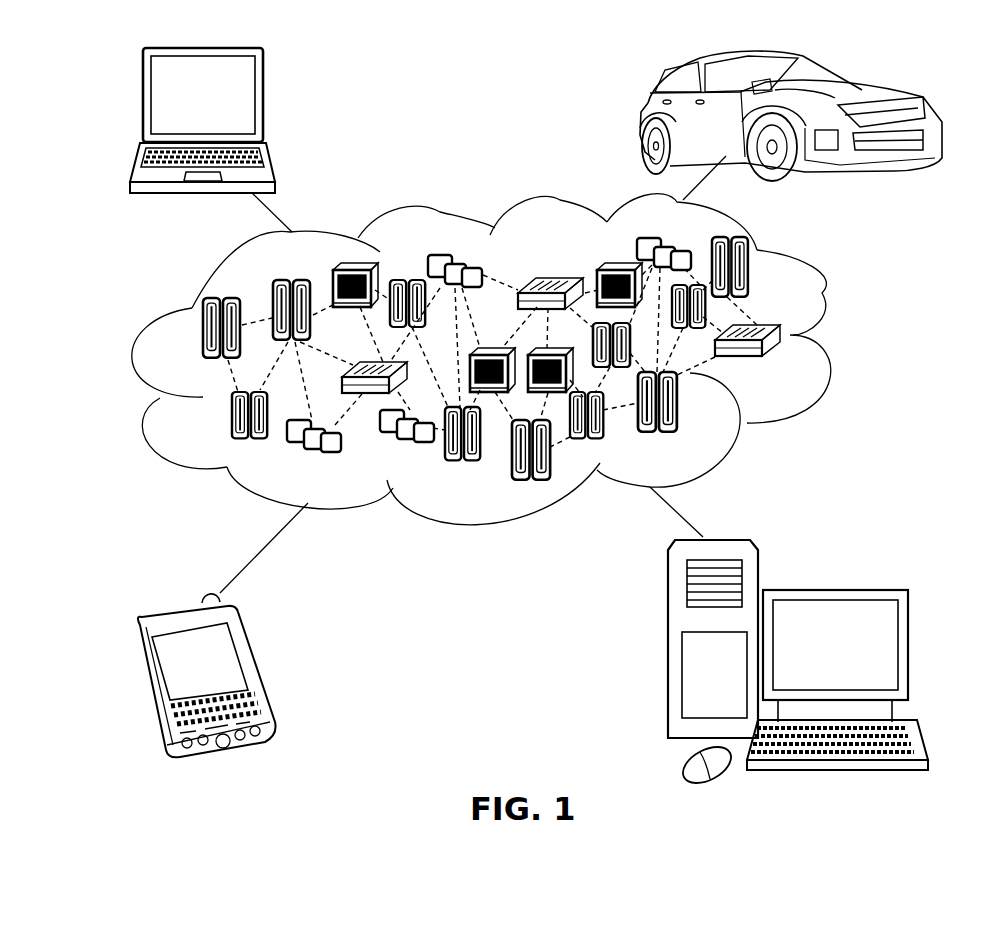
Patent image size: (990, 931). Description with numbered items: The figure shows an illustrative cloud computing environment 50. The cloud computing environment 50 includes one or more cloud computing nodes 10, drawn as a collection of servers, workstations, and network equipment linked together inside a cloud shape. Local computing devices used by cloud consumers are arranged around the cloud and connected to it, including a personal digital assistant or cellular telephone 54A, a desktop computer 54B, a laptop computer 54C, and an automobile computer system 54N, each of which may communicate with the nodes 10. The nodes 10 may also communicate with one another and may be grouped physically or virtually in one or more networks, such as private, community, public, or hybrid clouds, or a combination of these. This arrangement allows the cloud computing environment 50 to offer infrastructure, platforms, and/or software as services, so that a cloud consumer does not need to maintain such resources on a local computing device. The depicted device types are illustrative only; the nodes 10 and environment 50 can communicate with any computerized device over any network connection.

The cloud computing nodes 10 is at (536, 419).
The cloud computing environment 50 is at (834, 341).
The personal digital assistant (PDA) or cellular telephone 54A is at (254, 670).
The desktop computer 54B is at (832, 588).
The laptop computer 54C is at (265, 103).
The automobile computer system 54N is at (645, 117).